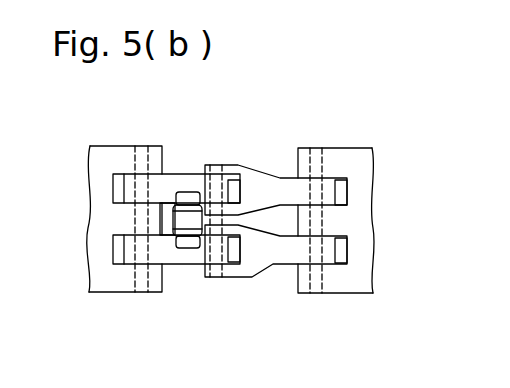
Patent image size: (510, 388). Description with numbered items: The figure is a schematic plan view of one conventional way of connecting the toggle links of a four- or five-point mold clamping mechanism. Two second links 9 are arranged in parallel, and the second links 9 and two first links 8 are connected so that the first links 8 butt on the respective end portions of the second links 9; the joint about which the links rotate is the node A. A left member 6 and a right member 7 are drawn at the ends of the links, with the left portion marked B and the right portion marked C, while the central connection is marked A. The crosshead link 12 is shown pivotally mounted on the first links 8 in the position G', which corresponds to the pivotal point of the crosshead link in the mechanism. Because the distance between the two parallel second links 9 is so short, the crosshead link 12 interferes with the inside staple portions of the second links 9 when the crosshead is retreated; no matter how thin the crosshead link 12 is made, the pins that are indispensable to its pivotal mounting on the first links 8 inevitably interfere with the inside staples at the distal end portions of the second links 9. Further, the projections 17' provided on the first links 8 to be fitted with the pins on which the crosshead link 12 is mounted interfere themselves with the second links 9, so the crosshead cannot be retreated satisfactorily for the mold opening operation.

The left base member 6 is at (110, 277).
The right base member 7 is at (348, 282).
The first link 8 is at (180, 183).
The second link 9 is at (265, 183).
The crosshead link 12 is at (172, 258).
The projection 17' is at (210, 229).
The left portion B is at (141, 143).
The node A is at (217, 155).
The right portion C is at (318, 142).
The pivotal mounting position of the crosshead link G' is at (97, 219).